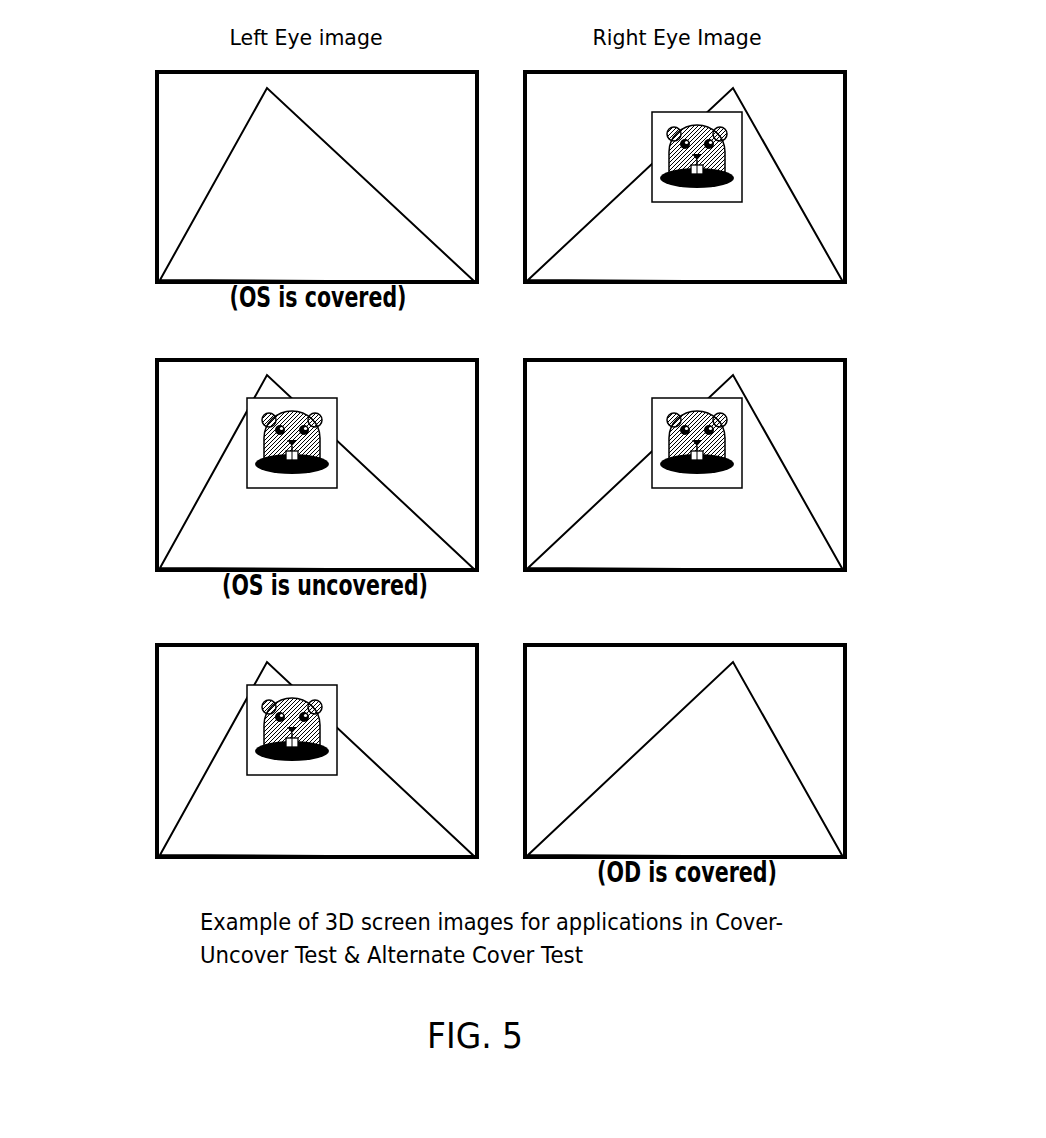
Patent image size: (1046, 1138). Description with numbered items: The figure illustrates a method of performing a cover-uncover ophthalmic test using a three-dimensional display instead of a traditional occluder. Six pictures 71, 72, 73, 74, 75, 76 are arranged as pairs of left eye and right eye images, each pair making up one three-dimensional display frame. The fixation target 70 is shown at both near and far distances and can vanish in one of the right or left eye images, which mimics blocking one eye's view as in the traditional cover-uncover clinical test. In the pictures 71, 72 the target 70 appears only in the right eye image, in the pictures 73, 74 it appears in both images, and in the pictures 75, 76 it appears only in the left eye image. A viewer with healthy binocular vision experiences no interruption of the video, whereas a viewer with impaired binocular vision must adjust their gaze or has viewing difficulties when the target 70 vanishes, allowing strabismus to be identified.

The fixation target 70 is at (657, 155).
The picture 71 is at (157, 101).
The picture 72 is at (845, 117).
The picture 73 is at (157, 398).
The picture 74 is at (845, 412).
The picture 75 is at (157, 677).
The picture 76 is at (848, 697).